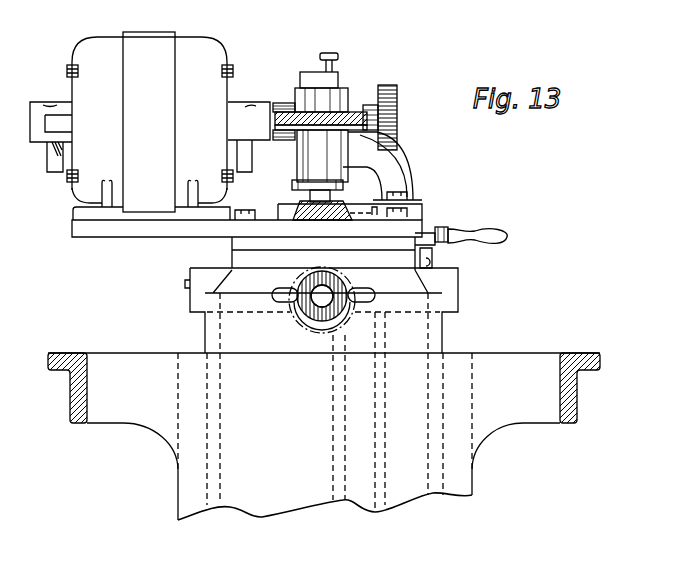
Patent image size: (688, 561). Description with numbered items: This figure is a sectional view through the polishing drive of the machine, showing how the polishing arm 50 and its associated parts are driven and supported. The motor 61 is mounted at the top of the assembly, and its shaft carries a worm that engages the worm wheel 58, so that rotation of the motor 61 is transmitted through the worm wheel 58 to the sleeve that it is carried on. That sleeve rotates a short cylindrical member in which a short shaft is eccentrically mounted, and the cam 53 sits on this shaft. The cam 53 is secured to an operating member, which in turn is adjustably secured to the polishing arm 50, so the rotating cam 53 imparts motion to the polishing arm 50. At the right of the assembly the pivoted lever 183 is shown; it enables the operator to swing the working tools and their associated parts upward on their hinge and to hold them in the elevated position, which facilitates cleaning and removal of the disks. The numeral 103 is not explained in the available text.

The motor 61 is at (218, 50).
The worm wheel 58 is at (350, 113).
The spindle column 103 is at (298, 152).
The cam 53 is at (292, 183).
The polishing arm 50 is at (297, 205).
The pivoted lever 183 is at (440, 228).